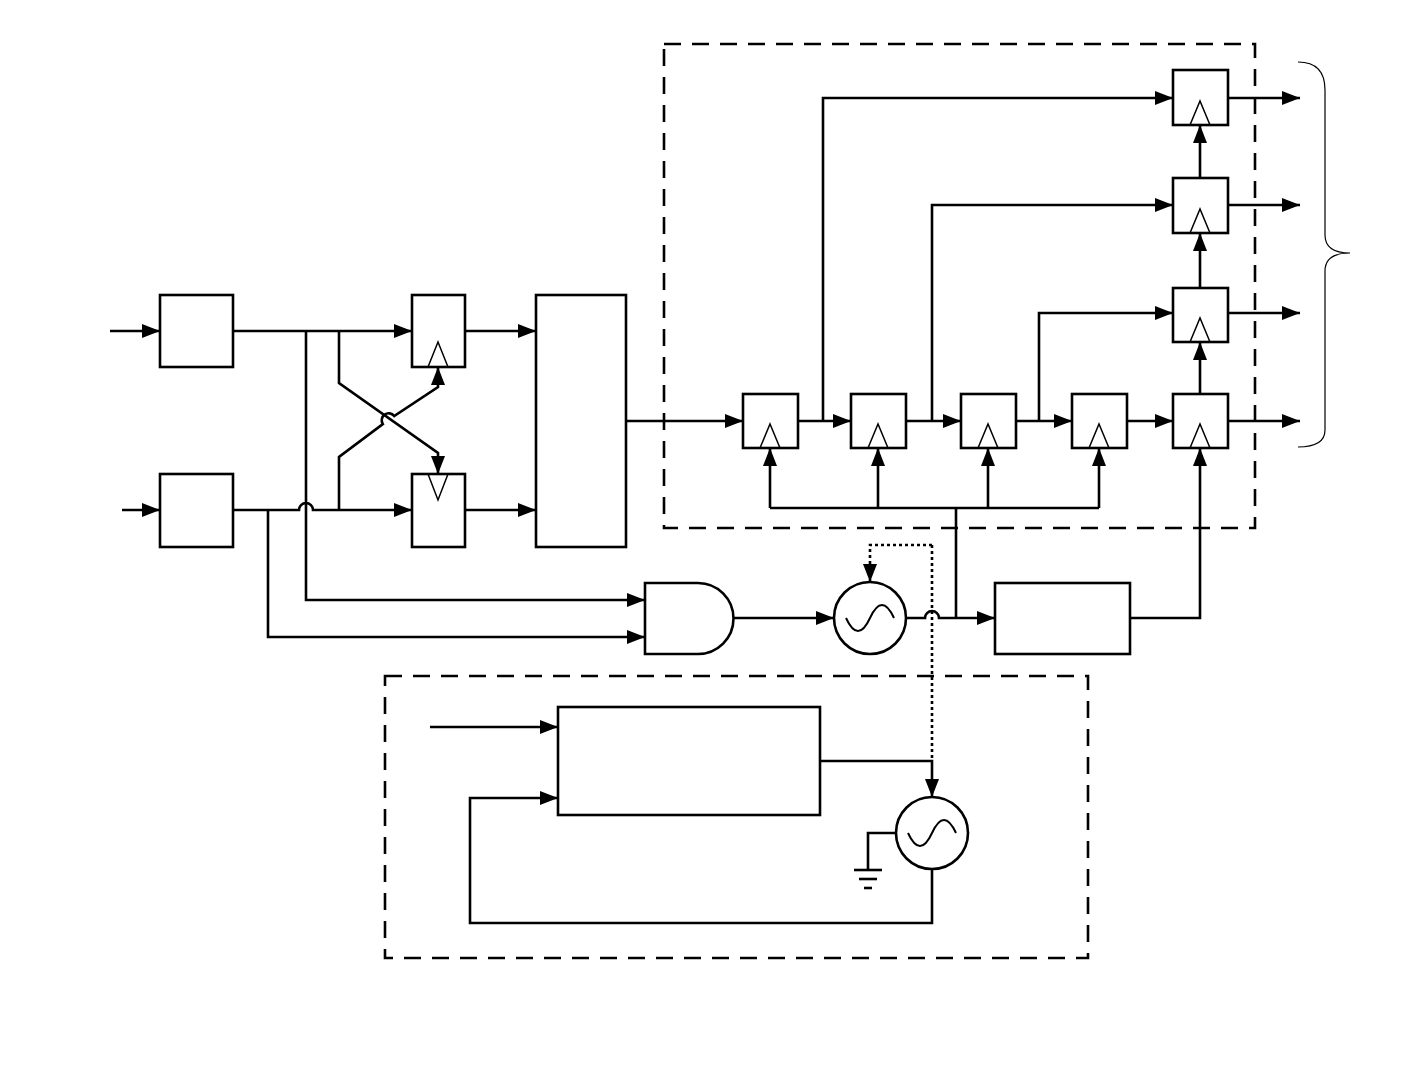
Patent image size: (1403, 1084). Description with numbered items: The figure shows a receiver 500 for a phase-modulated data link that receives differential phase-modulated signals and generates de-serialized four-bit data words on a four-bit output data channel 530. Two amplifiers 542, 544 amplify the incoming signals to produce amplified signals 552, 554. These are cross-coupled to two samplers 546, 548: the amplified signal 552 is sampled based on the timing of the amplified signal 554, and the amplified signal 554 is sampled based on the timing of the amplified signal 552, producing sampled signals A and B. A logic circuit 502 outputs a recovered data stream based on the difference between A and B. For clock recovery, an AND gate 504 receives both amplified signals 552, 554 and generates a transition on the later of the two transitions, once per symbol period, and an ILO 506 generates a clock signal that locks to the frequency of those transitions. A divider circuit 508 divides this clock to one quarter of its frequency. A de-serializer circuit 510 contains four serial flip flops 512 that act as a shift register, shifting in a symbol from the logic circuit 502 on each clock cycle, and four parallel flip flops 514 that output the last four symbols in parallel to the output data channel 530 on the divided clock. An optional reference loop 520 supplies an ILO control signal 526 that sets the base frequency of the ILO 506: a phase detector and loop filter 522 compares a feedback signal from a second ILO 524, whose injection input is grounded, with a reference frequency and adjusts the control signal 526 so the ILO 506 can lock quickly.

The receiver 500 is at (285, 101).
The logic circuit 502 is at (602, 450).
The AND gate 504 is at (708, 631).
The ILO 506 is at (842, 600).
The divider circuit 508 is at (1130, 654).
The de-serializer circuit 510 is at (757, 81).
The serial flip flops 512 is at (756, 394).
The parallel flip flops 514 is at (1173, 75).
The reference loop 520 is at (1073, 716).
The phase detector and loop filter 522 is at (689, 761).
The ILO 524 is at (958, 810).
The ILO control signal 526 is at (880, 760).
The output data channel 530 is at (1310, 254).
The amplifier 542 is at (192, 295).
The amplifier 544 is at (192, 474).
The sampler 546 is at (436, 295).
The sampler 548 is at (460, 474).
The amplified signal 552 is at (292, 330).
The amplified signal 554 is at (258, 509).